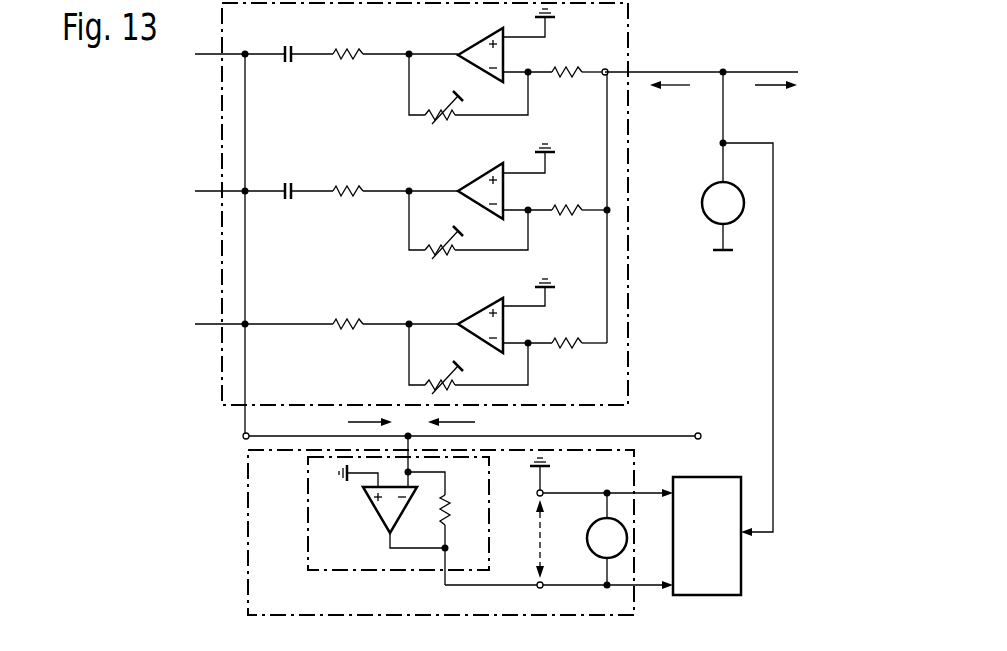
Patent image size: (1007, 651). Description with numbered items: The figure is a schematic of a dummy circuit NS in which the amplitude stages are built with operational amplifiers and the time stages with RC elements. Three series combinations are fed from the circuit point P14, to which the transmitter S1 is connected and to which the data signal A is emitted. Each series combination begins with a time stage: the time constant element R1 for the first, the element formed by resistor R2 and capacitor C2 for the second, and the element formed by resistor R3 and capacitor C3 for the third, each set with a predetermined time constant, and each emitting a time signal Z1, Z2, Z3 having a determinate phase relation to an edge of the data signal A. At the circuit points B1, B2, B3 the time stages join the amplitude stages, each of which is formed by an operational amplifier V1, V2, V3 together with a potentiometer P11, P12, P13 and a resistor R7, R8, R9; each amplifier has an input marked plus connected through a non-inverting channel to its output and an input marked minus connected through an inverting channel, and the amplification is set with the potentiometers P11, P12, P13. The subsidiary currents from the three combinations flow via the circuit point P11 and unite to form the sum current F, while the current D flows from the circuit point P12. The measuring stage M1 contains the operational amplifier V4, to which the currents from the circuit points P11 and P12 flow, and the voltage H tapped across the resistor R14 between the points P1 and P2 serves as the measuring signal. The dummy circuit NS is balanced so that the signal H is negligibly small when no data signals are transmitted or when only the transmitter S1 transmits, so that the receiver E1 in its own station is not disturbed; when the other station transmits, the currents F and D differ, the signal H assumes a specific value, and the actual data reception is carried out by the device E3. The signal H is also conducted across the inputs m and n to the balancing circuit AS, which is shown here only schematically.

The dummy circuit NS is at (628, 60).
The time signal Z3 is at (238, 43).
The time signal Z2 is at (240, 180).
The time signal Z1 is at (264, 313).
The capacitor C3 is at (305, 40).
The capacitor C2 is at (305, 176).
The resistor R3 is at (395, 39).
The resistor R2 is at (395, 176).
The resistor R1 is at (395, 311).
The circuit point B3 is at (409, 39).
The circuit point B2 is at (409, 175).
The circuit point B1 is at (409, 310).
The operational amplifier V3 is at (506, 45).
The operational amplifier V2 is at (505, 181).
The operational amplifier V1 is at (506, 316).
The operational amplifier V4 is at (392, 492).
The potentiometer P13 is at (468, 89).
The potentiometer / circuit point P12 is at (572, 322).
The potentiometer / circuit point P11 is at (369, 386).
The resistor R9 is at (575, 59).
The resistor R8 is at (581, 195).
The resistor R7 is at (579, 329).
The resistor R14 is at (443, 528).
The circuit point P14 is at (701, 111).
The data signal A is at (723, 304).
The transmitter S1 is at (723, 216).
The sum current F is at (362, 423).
The current D is at (459, 423).
The receiver E1 is at (248, 480).
The measuring stage M1 is at (308, 540).
The circuit point P1 is at (531, 482).
The circuit point P2 is at (496, 603).
The voltage H is at (535, 539).
The device E3 is at (607, 539).
The input m is at (608, 480).
The input n is at (608, 598).
The balancing circuit AS is at (707, 536).